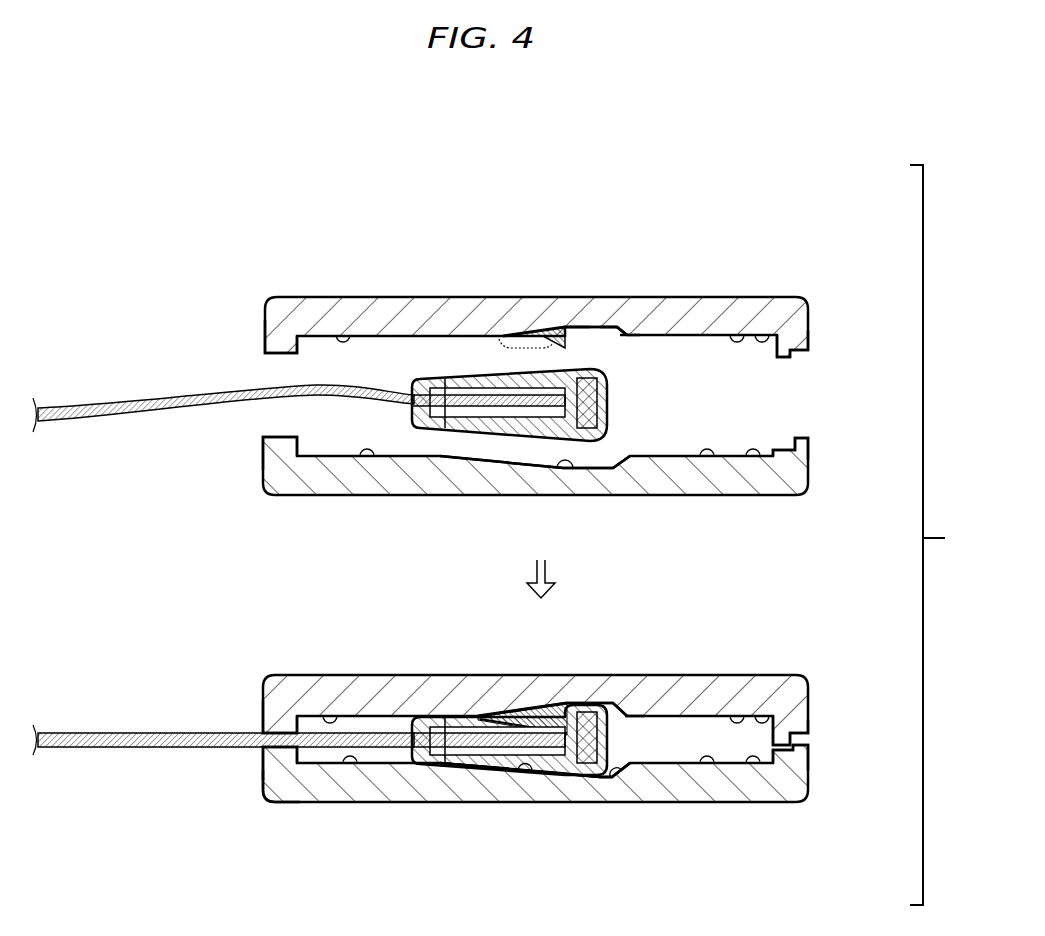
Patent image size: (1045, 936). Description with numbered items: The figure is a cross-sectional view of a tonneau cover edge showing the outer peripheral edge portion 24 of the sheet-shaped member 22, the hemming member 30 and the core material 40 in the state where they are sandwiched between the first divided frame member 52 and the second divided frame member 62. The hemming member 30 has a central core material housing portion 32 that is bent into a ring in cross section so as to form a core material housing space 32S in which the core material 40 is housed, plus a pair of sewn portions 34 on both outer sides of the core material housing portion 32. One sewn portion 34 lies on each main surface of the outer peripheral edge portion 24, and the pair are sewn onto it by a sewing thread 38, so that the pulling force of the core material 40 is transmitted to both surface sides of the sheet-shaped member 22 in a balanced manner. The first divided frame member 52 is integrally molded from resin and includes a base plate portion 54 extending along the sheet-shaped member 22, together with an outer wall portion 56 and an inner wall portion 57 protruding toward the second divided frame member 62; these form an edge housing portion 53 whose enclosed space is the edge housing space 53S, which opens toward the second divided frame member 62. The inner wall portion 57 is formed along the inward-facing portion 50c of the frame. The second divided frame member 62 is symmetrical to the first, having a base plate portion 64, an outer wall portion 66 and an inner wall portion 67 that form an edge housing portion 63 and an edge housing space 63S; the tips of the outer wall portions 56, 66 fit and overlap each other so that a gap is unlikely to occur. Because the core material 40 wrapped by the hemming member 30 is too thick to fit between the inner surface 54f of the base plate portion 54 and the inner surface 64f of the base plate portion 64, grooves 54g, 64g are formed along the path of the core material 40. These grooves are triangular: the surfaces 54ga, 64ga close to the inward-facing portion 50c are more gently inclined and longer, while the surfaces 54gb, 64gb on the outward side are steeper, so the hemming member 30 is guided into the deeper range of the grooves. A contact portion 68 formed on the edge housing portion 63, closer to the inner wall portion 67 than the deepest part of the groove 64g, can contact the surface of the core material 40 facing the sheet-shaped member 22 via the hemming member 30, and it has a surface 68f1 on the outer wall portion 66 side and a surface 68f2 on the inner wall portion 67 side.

The sheet-shaped member 22 is at (105, 402).
The outer peripheral edge portion 24 is at (465, 365).
The hemming member 30 is at (583, 370).
The core material housing portion 32 is at (608, 386).
The core material housing space 32S is at (597, 403).
The sewn portion 34 is at (425, 380).
The sewing thread 38 is at (443, 388).
The core material 40 is at (623, 330).
The inward-facing portion 50c is at (265, 790).
The first divided frame member 52 is at (813, 470).
The edge housing portion 53 is at (753, 458).
The edge housing space 53S is at (707, 458).
The base plate portion 54 is at (630, 496).
The inner surface 54f is at (367, 458).
The groove 54g is at (565, 470).
The surface close to the inward-facing portion 54ga is at (518, 802).
The surface close to the outward-facing portion 54gb is at (613, 802).
The outer wall portion 56 is at (812, 447).
The inner wall portion 57 is at (262, 440).
The second divided frame member 62 is at (818, 313).
The edge housing portion 63 is at (763, 345).
The edge housing space 63S is at (740, 340).
The base plate portion 64 is at (305, 297).
The inner surface 64f is at (343, 342).
The groove 64g is at (590, 330).
The surface close to the inward-facing portion 64ga is at (553, 326).
The surface close to the outward-facing portion 64gb is at (648, 340).
The outer wall portion 66 is at (807, 352).
The inner wall portion 67 is at (265, 341).
The contact portion 68 is at (535, 352).
The surface on the outer wall portion side 68f1 is at (563, 327).
The surface on the inner wall portion side 68f2 is at (503, 335).